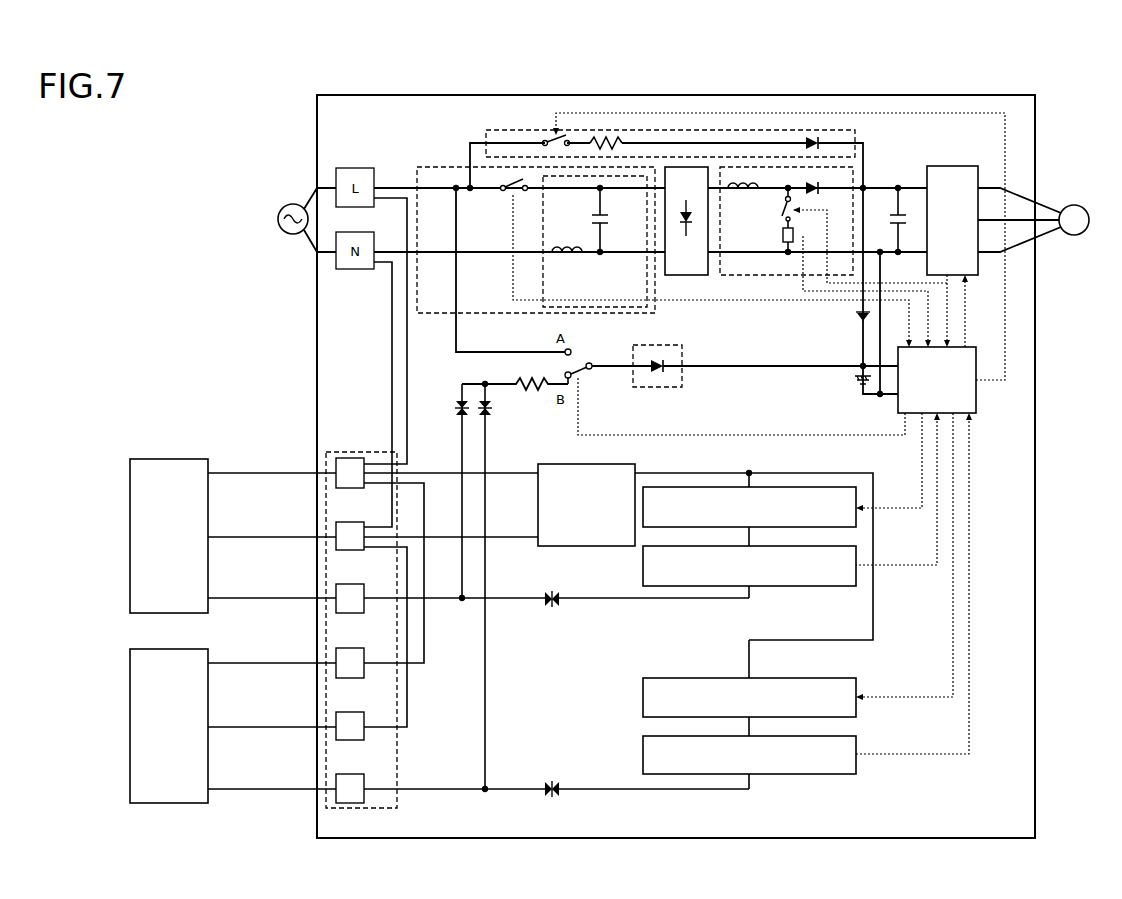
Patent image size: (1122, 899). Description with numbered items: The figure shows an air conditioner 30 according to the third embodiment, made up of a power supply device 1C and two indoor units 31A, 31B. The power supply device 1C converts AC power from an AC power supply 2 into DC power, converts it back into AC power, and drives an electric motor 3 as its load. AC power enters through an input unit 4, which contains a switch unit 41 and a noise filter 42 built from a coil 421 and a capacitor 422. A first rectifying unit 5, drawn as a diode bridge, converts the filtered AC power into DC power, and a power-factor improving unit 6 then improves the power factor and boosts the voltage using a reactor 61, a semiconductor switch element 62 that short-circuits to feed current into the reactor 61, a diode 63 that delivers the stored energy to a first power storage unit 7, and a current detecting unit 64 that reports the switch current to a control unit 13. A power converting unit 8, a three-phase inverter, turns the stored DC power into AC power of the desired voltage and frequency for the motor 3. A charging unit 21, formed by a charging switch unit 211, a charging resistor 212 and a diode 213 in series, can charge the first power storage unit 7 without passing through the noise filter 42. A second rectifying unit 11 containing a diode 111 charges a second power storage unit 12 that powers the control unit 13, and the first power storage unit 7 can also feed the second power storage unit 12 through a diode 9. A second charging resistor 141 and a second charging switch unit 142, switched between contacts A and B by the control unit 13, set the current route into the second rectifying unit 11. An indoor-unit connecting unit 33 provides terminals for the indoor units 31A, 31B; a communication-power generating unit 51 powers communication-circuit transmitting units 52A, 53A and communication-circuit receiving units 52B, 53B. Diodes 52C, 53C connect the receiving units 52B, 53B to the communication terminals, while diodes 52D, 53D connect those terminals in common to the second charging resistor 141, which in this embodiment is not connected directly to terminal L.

The power supply device 1C is at (978, 95).
The air conditioner 30 is at (184, 231).
The AC power supply 2 is at (284, 207).
The electric motor 3 is at (1083, 207).
The input unit 4 is at (442, 167).
The charging unit 21 is at (490, 130).
The charging switch unit 211 is at (551, 134).
The charging resistor 212 is at (607, 142).
The diode 213 is at (811, 137).
The switch unit 41 is at (503, 198).
The noise filter 42 is at (543, 290).
The coil 421 is at (572, 262).
The capacitor 422 is at (606, 221).
The first rectifying unit 5 is at (690, 276).
The power-factor improving unit 6 is at (731, 277).
The reactor 61 is at (744, 200).
The semiconductor switch element 62 is at (782, 214).
The diode 63 is at (809, 183).
The current detecting unit 64 is at (786, 246).
The first power storage unit 7 is at (899, 209).
The power converting unit 8 is at (960, 166).
The diode 9 is at (856, 316).
The second rectifying unit 11 is at (659, 345).
The diode 111 is at (658, 383).
The second power storage unit 12 is at (852, 380).
The control unit 13 is at (977, 408).
The second charging resistor 141 is at (534, 388).
The second charging switch unit 142 is at (586, 380).
The indoor unit 31A is at (182, 459).
The indoor unit 31B is at (182, 649).
The indoor-unit connecting unit 33 is at (397, 808).
The communication-power generating unit 51 is at (596, 546).
The communication-circuit transmitting unit 52A is at (858, 497).
The communication-circuit receiving unit 52B is at (858, 555).
The diode 52C is at (553, 607).
The diode 52D is at (455, 418).
The communication-circuit transmitting unit 53A is at (858, 686).
The communication-circuit receiving unit 53B is at (858, 746).
The diode 53C is at (553, 797).
The diode 53D is at (492, 418).